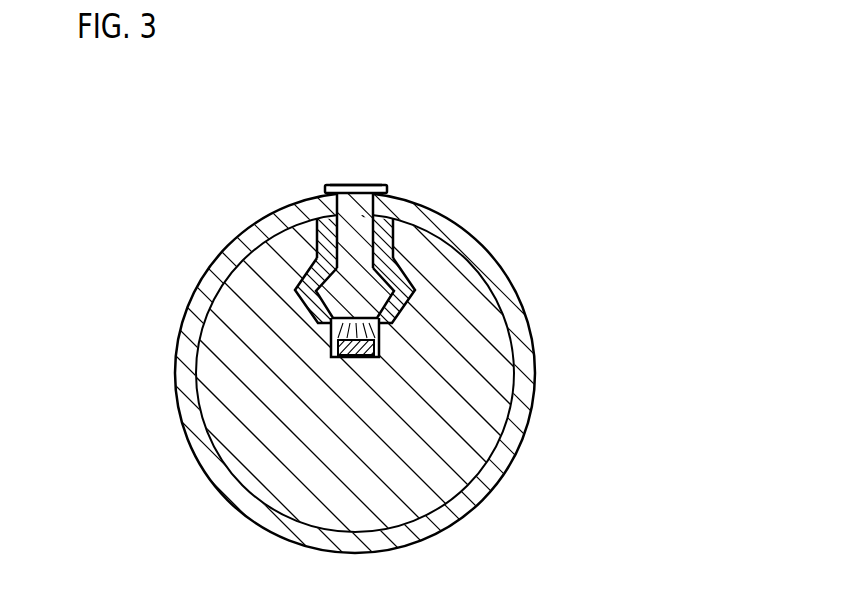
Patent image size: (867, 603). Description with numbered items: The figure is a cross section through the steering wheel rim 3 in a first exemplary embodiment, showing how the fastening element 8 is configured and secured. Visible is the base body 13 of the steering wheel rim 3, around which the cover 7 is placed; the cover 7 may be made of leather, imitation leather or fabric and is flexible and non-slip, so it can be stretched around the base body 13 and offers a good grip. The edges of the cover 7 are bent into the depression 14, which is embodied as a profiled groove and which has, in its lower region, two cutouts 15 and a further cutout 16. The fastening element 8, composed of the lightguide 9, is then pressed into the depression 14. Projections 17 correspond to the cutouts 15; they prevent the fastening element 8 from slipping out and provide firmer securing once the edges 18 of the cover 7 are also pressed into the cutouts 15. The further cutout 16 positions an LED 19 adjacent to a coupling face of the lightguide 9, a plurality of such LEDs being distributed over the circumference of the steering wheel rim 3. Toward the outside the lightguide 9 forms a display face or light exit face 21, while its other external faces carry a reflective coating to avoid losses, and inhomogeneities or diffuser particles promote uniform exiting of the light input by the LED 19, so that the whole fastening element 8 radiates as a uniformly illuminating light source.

The steering wheel rim 3 is at (530, 217).
The cover 7 is at (516, 404).
The fastening element 8 is at (346, 178).
The lightguide 9 is at (372, 197).
The base body 13 is at (432, 527).
The depression 14 is at (431, 233).
The cutouts 15 is at (300, 284).
The further cutout 16 is at (330, 337).
The projections 17 is at (317, 303).
The edges 18 is at (296, 220).
The LED 19 is at (366, 358).
The light exit face 21 is at (358, 183).